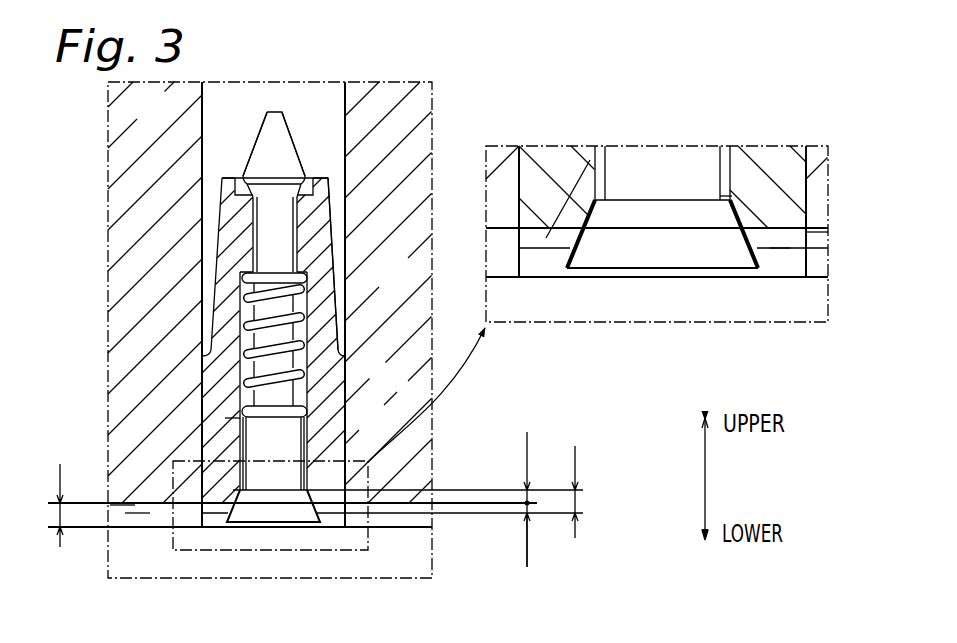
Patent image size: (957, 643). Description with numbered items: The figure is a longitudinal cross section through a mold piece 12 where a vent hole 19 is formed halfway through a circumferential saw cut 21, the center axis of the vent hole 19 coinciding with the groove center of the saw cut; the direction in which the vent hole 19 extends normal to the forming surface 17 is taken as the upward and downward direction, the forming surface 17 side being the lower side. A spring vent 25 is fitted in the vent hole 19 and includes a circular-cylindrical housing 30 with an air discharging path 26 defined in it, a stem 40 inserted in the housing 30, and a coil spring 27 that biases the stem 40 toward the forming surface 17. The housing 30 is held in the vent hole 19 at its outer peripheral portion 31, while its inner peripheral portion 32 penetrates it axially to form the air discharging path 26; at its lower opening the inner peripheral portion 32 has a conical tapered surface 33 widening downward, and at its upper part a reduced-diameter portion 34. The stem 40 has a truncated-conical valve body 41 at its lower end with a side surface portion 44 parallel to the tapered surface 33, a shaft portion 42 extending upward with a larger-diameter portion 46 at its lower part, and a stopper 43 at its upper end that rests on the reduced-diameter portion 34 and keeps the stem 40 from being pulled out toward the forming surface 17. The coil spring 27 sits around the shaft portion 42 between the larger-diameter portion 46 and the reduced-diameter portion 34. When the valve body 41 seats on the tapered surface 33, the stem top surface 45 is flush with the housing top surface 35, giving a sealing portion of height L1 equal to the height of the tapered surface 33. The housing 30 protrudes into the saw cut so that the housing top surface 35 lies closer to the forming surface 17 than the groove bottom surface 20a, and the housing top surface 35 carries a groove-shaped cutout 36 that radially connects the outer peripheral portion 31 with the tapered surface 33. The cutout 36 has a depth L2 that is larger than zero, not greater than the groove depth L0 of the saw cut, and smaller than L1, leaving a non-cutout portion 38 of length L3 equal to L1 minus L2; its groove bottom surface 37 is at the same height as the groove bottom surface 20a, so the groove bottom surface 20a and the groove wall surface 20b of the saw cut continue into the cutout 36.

The housing 12 is at (160, 118).
The forming surface 17 is at (380, 527).
The vent hole 19 is at (245, 118).
The groove bottom surface 20a is at (122, 505).
The groove wall surface 20b is at (137, 513).
The circumferential saw cut 21 is at (162, 518).
The spring vent 25 is at (178, 347).
The air discharging path 26 is at (304, 377).
The coil spring 27 is at (345, 303).
The housing 30 is at (318, 188).
The outer peripheral portion 31 is at (202, 399).
The inner peripheral portion 32 is at (238, 418).
The tapered surface 33 is at (739, 222).
The reduced-diameter portion 34 is at (254, 236).
The housing top surface 35 is at (547, 250).
The cutout 36 is at (778, 244).
The groove bottom surface 37 is at (788, 228).
The non-cutout portion 38 is at (316, 492).
The stem 40 is at (275, 115).
The valve body 41 is at (287, 518).
The shaft portion 42 is at (290, 246).
The stopper 43 is at (290, 172).
The side surface portion 44 is at (730, 198).
The stem top surface 45 is at (273, 523).
The larger-diameter portion 46 is at (288, 454).
The groove depth L0 is at (85, 464).
The length of tapered surface L1 is at (600, 445).
The cutout depth L2 is at (555, 572).
The length of non-cutout portion L3 is at (552, 431).